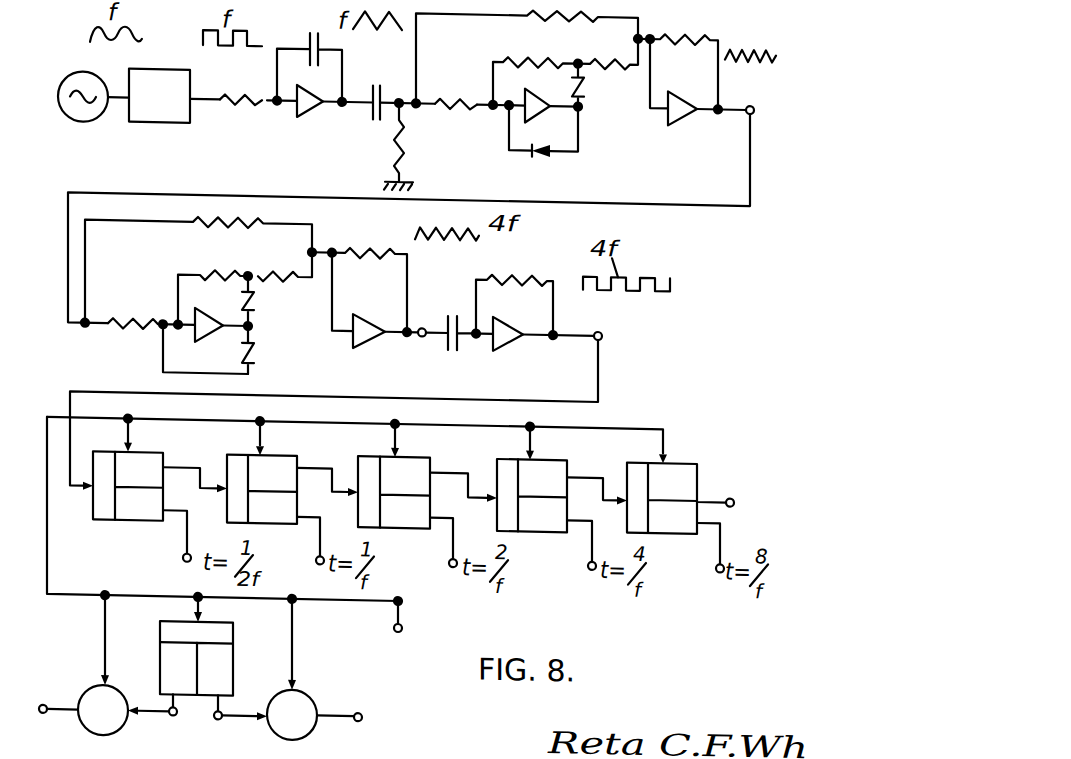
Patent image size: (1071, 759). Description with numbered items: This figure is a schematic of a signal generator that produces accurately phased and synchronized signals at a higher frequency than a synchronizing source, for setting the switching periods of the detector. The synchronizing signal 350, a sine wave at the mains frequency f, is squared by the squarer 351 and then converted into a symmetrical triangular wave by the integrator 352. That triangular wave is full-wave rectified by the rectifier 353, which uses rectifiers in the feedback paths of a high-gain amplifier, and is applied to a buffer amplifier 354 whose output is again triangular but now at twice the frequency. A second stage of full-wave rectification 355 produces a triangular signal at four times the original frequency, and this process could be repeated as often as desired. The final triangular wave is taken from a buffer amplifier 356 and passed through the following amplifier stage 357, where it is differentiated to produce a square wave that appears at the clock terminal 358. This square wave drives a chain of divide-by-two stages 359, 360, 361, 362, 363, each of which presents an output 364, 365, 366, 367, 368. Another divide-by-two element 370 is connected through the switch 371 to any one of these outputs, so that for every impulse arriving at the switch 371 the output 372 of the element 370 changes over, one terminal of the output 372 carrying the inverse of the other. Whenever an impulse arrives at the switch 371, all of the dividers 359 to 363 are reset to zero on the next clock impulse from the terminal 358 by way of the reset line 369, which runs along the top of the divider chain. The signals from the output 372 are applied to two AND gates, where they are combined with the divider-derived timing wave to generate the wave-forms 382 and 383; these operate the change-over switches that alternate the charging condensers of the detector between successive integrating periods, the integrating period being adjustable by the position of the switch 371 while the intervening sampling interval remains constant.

The synchronizing signal 350 is at (90, 121).
The squarer 351 is at (173, 105).
The integrator 352 is at (235, 99).
The full-wave rectifier 353 is at (623, 137).
The buffer amplifier 354 is at (679, 107).
The second stage of full-wave rectification 355 is at (206, 328).
The buffer amplifier 356 is at (363, 310).
The amplifier 357 is at (506, 327).
The clock impulse output 358 is at (602, 328).
The divide by two stage 359 is at (120, 522).
The divide by two stage 360 is at (267, 518).
The divide by two stage 361 is at (402, 520).
The divide by two stage 362 is at (530, 521).
The divide by two stage 363 is at (665, 520).
The divider output 364 is at (183, 552).
The divider output 365 is at (317, 557).
The divider output 366 is at (450, 558).
The divider output 367 is at (588, 558).
The divider output 368 is at (717, 558).
The reset line 369 is at (228, 415).
The divide by two element 370 is at (242, 650).
The switch 371 is at (408, 613).
The output 372 is at (195, 718).
The wave-form output 382 is at (45, 712).
The wave-form output 383 is at (362, 715).